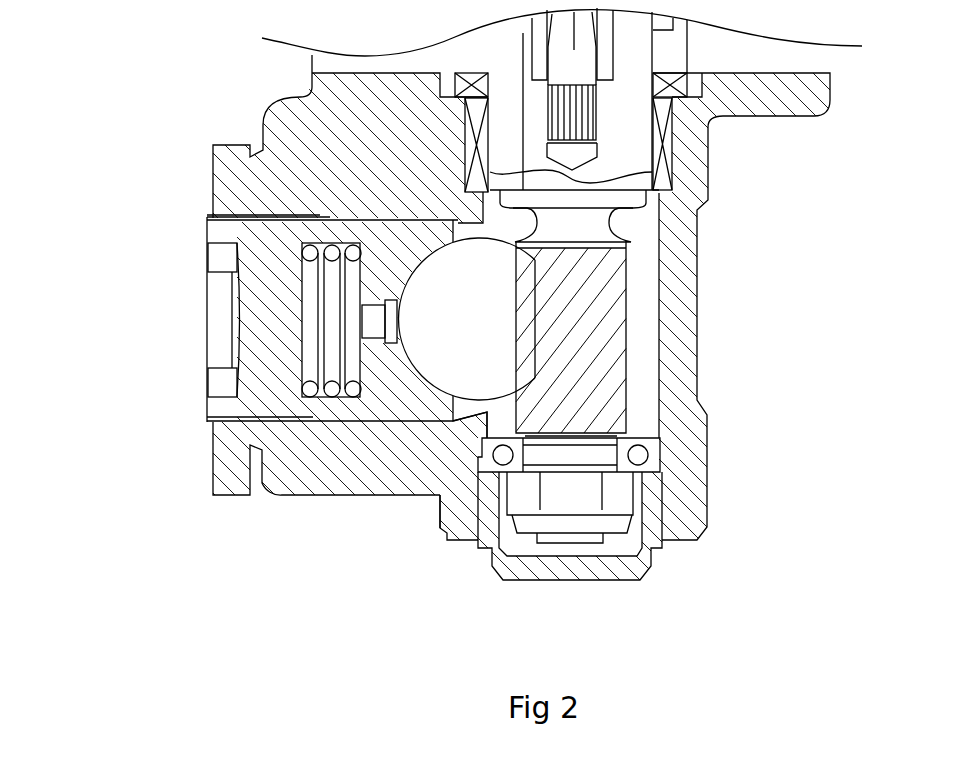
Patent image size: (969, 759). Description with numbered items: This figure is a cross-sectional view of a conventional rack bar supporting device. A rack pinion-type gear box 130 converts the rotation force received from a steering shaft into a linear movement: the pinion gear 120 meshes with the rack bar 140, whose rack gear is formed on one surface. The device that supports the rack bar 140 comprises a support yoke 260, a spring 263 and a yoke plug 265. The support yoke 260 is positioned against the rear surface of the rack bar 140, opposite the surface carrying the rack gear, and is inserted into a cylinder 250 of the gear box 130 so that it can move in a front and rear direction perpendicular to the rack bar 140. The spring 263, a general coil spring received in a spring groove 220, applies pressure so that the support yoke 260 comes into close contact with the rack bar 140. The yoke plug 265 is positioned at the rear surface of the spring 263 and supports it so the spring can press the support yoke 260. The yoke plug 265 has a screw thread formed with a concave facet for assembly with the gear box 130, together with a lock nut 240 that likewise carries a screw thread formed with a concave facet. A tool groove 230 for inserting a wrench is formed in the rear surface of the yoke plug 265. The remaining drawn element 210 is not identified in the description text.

The pinion gear 120 is at (603, 342).
The rack pinion-type gear box 130 is at (310, 110).
The rack bar 140 is at (492, 333).
The housing body 210 is at (282, 183).
The spring groove 220 is at (317, 400).
The tool groove 230 is at (218, 342).
The lock nut 240 is at (220, 460).
The cylinder 250 is at (445, 425).
The support yoke 260 is at (382, 405).
The spring 263 is at (280, 300).
The yoke plug 265 is at (247, 237).